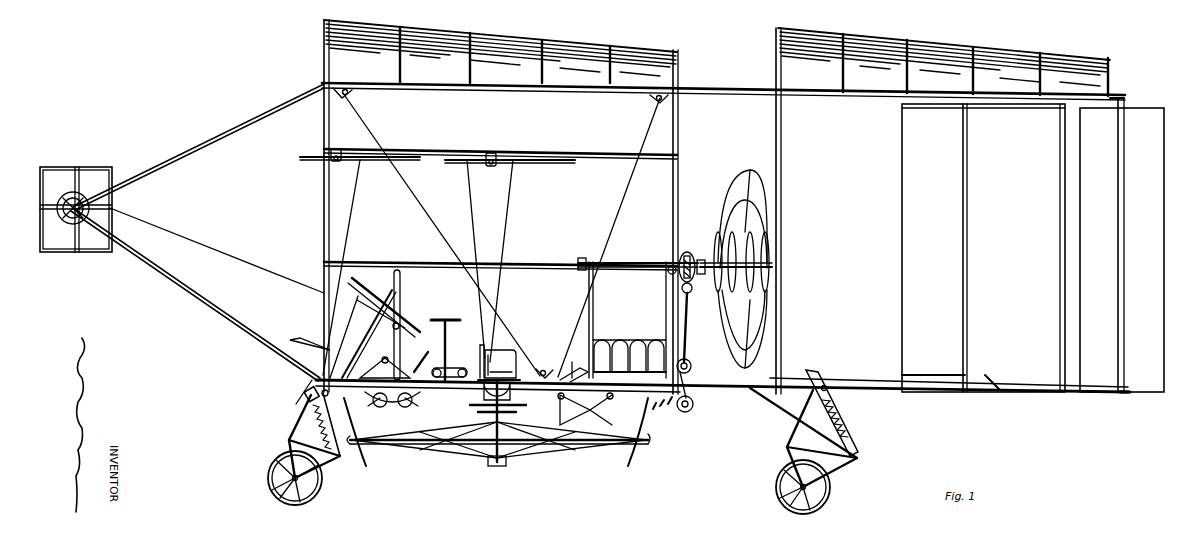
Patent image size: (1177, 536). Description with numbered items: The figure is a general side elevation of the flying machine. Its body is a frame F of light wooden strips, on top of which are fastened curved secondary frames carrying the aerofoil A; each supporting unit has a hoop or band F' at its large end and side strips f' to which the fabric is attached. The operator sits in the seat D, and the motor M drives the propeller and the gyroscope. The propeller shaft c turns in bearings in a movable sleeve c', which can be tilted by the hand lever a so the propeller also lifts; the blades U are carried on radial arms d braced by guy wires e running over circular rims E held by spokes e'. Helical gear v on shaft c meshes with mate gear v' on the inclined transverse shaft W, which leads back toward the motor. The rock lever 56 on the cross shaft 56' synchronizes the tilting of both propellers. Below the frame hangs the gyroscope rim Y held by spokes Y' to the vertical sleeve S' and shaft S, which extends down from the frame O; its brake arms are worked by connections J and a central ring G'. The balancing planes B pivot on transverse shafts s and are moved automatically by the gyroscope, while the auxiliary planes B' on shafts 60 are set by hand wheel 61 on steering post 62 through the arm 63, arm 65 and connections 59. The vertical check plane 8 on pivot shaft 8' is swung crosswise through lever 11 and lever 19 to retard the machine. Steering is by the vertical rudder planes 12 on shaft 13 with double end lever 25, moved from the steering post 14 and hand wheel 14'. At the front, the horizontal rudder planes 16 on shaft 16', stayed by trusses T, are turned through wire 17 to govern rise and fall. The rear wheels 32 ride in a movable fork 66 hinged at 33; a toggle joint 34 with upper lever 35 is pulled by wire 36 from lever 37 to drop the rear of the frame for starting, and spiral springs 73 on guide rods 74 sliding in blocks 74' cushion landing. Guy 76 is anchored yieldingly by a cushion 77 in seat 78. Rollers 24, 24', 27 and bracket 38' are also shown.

The vertical check plane 8 is at (983, 248).
The vertical pivot shaft 8' is at (986, 273).
The lever 11 is at (985, 375).
The vertical rudder plane 12 is at (1122, 245).
The vertical shaft 13 is at (1124, 268).
The steering post 14 is at (384, 307).
The hand wheel 14' is at (432, 305).
The horizontal double rudder planes 16 is at (76, 210).
The horizontal transverse shaft 16' is at (55, 236).
The band or wire 17 is at (198, 188).
The lever 19 is at (575, 361).
The roller 24 is at (371, 415).
The roller 24' is at (408, 414).
The double end lever 25 is at (1131, 393).
The roller carrier 27 is at (385, 418).
The rear supporting wheel 32 is at (322, 484).
The hinge 33 is at (785, 447).
The toggle joint 34 is at (838, 424).
The upper toggle lever 35 is at (840, 400).
The wire 36 is at (440, 405).
The lever 37 is at (401, 273).
The bracket 38' is at (574, 375).
The rock lever 56 is at (581, 409).
The shaft 56' is at (556, 392).
The connections 59 is at (366, 219).
The horizontal shaft 60 is at (338, 164).
The hand wheel 61 is at (406, 305).
The steering post 62 is at (342, 350).
The arm 63 is at (310, 337).
The arm 65 is at (385, 367).
The movable fork or frame 66 is at (340, 462).
The spiral spring 73 is at (332, 448).
The guide rod 74 is at (576, 413).
The block 74' is at (863, 413).
The guy 76 is at (412, 189).
The yielding cushion or spring washer 77 is at (343, 97).
The seat 78 is at (349, 93).
The aerofoil A is at (717, 58).
The balancing plane B is at (510, 169).
The auxiliary plane B' is at (360, 167).
The operator's seat D is at (445, 342).
The circular rim E is at (768, 246).
The frame F is at (722, 216).
The hoop or band F' is at (718, 51).
The motor M is at (627, 320).
The gyroscope shaft S is at (505, 360).
The vertical sleeve S' is at (503, 422).
The truss or stay T is at (40, 186).
The propeller blade U is at (738, 272).
The roller carrier U' is at (389, 399).
The transverse shaft W is at (690, 329).
The gyroscope rim Y is at (499, 448).
The spokes Y' is at (499, 447).
The hand lever a is at (452, 368).
The seat b is at (492, 350).
The propeller shaft c is at (697, 258).
The movable sleeve c' is at (638, 254).
The radial arm d is at (766, 320).
The guy wire e is at (753, 180).
The spoke e' is at (781, 274).
The side strip f' is at (656, 75).
The cable k' is at (495, 261).
The transverse horizontal shaft s is at (491, 167).
The helical gear v is at (689, 262).
The mate helical gear v' is at (703, 290).
The clutch gear x is at (690, 380).
The central ring G' is at (496, 398).
The connections J is at (612, 405).
The frame O is at (512, 358).